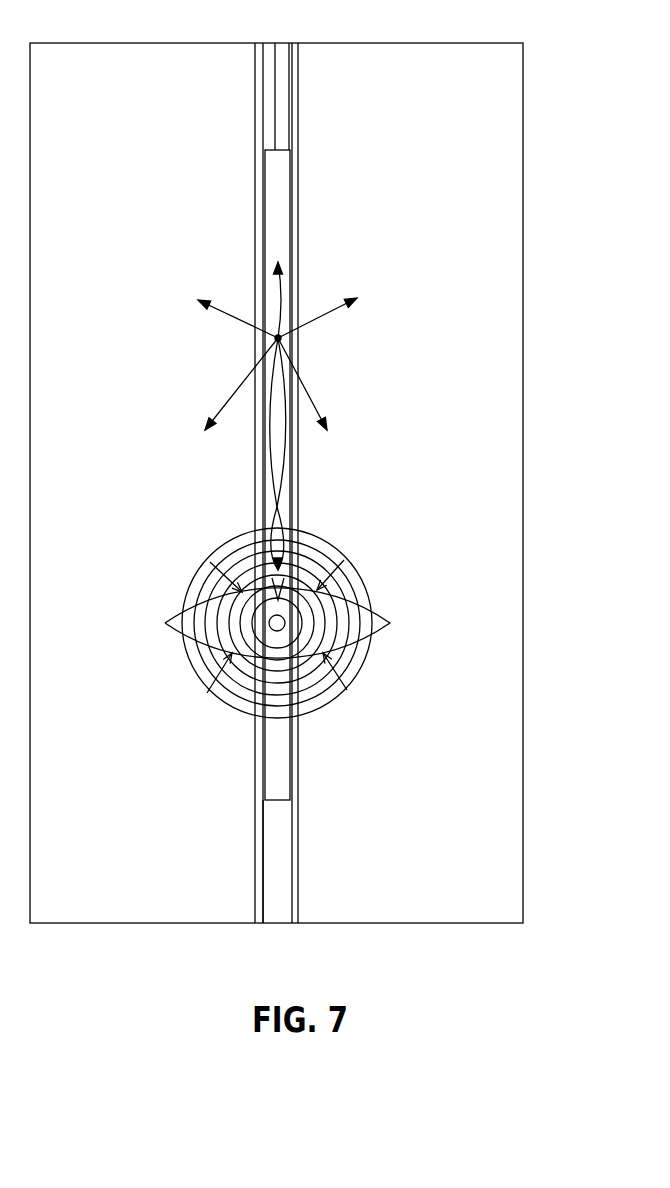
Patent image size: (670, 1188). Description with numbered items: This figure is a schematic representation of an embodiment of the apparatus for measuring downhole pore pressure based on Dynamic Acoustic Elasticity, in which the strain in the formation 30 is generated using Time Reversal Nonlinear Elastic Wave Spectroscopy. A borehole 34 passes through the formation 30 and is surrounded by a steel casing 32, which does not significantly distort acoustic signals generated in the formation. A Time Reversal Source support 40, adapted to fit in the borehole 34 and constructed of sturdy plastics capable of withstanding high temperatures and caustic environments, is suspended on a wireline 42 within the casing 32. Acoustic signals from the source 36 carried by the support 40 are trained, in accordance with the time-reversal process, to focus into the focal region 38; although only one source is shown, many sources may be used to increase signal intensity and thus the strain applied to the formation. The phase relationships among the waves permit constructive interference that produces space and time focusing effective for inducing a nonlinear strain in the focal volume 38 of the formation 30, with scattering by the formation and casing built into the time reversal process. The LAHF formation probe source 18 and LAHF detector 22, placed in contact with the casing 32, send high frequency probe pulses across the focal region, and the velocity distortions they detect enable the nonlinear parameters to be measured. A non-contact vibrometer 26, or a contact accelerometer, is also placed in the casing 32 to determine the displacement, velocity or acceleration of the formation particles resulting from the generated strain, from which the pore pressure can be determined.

The formation 30 is at (121, 232).
The casing 32 is at (255, 178).
The wireline 42 is at (275, 113).
The Time Reversal Source support 40 is at (270, 181).
The source 36 is at (275, 338).
The focal region 38 is at (205, 592).
The non-contact vibrometer 26 is at (262, 630).
The LAHF formation probe source 18 is at (396, 490).
The LAHF detector 22 is at (320, 588).
The borehole 34 is at (277, 867).